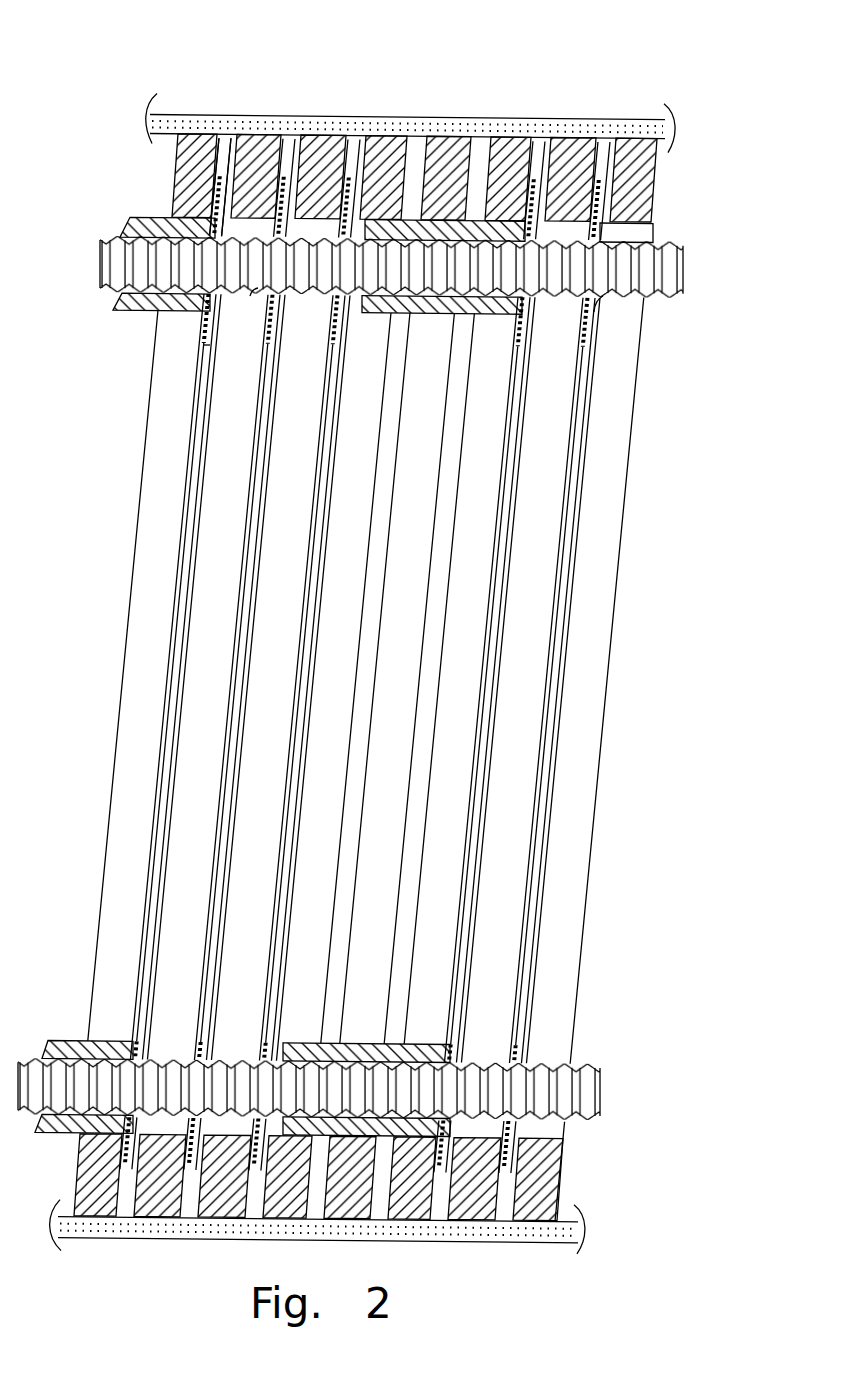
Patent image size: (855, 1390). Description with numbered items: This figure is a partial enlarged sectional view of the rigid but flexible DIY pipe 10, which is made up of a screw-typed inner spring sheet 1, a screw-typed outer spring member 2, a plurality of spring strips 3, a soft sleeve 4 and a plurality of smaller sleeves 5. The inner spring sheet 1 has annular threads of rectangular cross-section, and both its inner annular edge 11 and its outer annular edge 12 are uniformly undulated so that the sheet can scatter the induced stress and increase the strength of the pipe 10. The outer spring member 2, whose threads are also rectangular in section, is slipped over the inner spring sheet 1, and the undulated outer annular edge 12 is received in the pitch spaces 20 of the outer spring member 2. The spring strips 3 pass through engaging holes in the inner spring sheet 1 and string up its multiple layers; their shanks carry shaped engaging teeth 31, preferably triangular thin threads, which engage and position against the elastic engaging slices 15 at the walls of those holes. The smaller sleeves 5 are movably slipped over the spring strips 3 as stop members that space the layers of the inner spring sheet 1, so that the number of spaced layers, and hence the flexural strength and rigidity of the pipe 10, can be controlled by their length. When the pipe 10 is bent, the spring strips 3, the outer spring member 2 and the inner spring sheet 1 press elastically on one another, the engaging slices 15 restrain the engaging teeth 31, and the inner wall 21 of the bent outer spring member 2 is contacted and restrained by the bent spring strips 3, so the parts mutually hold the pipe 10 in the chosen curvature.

The inner spring sheet 1 is at (582, 446).
The outer spring member 2 is at (604, 510).
The spring strips 3 is at (587, 1093).
The soft sleeve 4 is at (393, 126).
The smaller sleeves 5 is at (363, 1052).
The pipe 10 is at (462, 86).
The inner annular edge 11 is at (208, 345).
The outer annular edge 12 is at (224, 180).
The elastic engaging slices 15 is at (597, 302).
The pitch spaces 20 is at (540, 152).
The inner wall 21 is at (632, 232).
The engaging teeth 31 is at (253, 290).